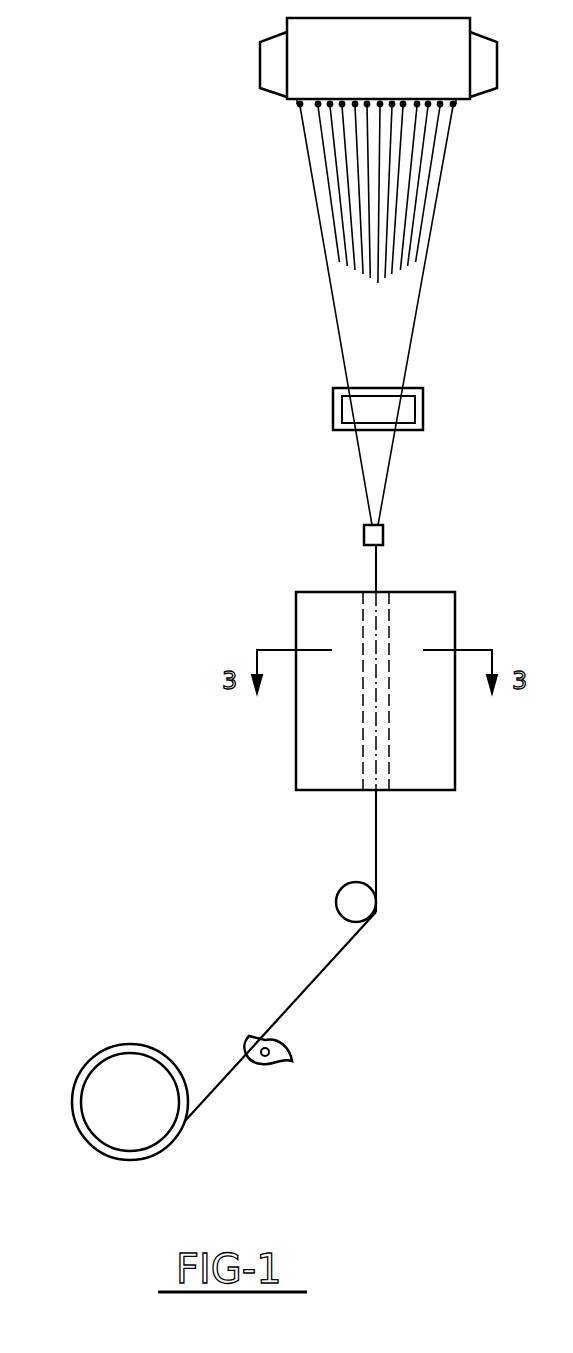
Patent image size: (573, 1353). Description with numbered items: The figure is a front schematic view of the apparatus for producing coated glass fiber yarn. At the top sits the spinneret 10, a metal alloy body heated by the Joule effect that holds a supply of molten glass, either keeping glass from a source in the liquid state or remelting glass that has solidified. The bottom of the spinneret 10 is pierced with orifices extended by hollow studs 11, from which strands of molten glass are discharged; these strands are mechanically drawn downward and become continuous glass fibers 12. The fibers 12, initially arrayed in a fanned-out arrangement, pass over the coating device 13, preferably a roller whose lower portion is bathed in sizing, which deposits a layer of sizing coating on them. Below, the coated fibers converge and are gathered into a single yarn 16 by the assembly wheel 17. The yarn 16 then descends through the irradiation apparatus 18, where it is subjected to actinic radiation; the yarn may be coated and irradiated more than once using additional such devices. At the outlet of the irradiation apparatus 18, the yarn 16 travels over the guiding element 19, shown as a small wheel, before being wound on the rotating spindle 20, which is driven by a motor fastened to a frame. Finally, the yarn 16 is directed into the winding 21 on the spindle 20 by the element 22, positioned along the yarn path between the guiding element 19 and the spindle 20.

The spinneret 10 is at (260, 58).
The hollow studs 11 is at (298, 104).
The continuous glass fibers 12 is at (424, 272).
The coating device 13 is at (424, 412).
The yarn 16 is at (378, 572).
The assembly wheel 17 is at (364, 536).
The irradiation apparatus 18 is at (296, 740).
The guiding element 19 is at (367, 905).
The rotating spindle 20 is at (142, 1140).
The winding 21 is at (72, 1100).
The element 22 is at (293, 1058).